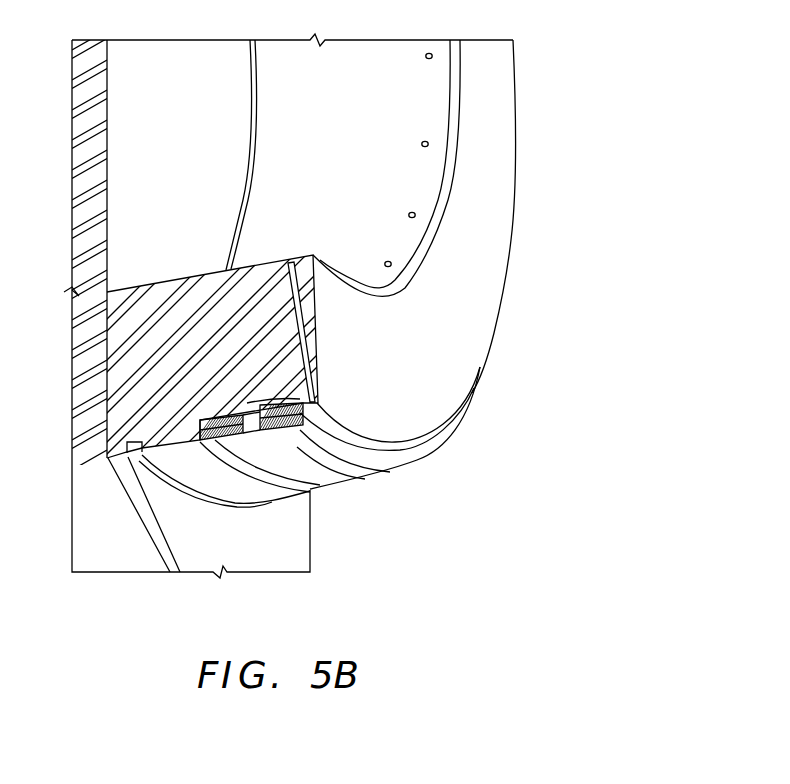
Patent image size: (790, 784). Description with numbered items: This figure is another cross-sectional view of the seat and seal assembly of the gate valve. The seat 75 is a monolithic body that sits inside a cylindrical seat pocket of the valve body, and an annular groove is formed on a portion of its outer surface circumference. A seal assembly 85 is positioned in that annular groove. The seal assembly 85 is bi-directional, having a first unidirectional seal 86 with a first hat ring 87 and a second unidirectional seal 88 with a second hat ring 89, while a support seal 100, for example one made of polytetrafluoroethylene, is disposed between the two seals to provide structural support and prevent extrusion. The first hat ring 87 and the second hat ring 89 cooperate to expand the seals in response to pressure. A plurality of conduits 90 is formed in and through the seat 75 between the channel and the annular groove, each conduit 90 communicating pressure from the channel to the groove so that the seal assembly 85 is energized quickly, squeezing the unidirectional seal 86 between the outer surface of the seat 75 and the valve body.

The seat 75 is at (477, 238).
The seal assembly 85 is at (250, 398).
The first unidirectional seal 86 is at (311, 492).
The first hat ring 87 is at (322, 437).
The second unidirectional seal 88 is at (223, 440).
The second hat ring 89 is at (162, 438).
The conduit 90 is at (430, 143).
The support seal 100 is at (250, 440).